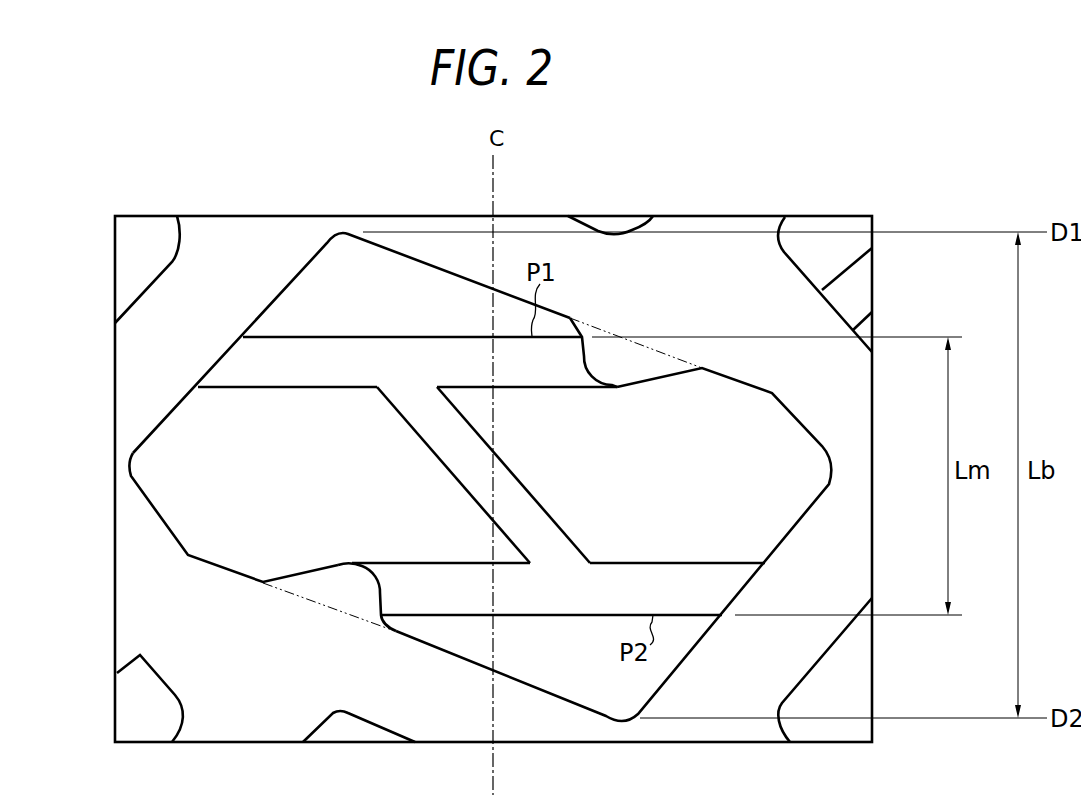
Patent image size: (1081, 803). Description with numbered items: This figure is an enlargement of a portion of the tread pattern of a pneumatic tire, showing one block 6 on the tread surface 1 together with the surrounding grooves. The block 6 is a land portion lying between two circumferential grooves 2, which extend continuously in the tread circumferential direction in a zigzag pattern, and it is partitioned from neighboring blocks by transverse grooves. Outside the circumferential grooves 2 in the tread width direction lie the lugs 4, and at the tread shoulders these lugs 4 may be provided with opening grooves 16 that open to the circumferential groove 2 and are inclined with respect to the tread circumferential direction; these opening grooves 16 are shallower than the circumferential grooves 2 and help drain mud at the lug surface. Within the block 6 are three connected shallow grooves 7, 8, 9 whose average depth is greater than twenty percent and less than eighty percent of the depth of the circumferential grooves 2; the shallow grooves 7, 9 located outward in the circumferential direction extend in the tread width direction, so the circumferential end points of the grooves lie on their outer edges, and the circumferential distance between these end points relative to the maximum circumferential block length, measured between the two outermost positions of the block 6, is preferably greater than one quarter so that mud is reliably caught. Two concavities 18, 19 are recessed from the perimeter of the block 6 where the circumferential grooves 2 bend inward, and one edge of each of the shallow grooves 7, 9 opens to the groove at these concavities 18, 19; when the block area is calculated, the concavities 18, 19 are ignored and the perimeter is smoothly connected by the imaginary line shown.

The tread surface 1 is at (681, 186).
The circumferential grooves 2 is at (208, 625).
The lugs 4 is at (831, 271).
The block 6 is at (362, 302).
The shallow groove 7 is at (658, 583).
The shallow groove 8 is at (453, 448).
The shallow groove 9 is at (313, 362).
The opening grooves 16 is at (857, 293).
The concavity 18 is at (612, 367).
The concavity 19 is at (347, 590).